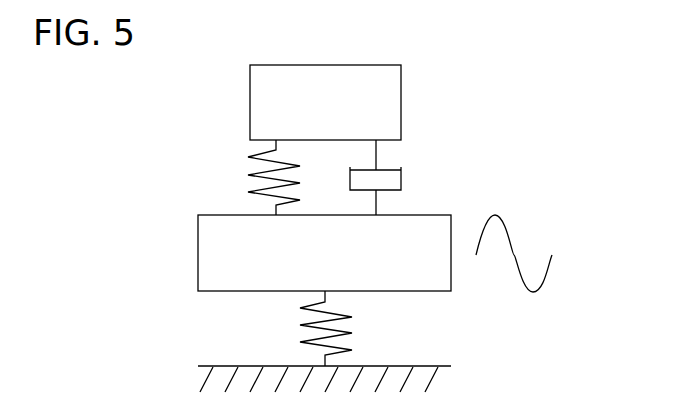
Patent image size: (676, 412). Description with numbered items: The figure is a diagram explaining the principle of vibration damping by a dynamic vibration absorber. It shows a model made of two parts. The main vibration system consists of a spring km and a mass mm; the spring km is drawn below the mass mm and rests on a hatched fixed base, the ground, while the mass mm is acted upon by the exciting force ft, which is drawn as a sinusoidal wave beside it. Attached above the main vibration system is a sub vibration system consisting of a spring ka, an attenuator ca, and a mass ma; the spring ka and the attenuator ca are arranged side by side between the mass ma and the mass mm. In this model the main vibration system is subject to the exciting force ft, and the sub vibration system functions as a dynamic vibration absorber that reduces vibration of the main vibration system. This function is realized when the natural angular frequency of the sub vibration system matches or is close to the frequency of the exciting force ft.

The mass ma is at (325, 102).
The spring ka is at (257, 177).
The attenuator ca is at (391, 177).
The mass mm is at (324, 253).
The spring km is at (307, 328).
The fixed base / ground is at (324, 379).
The exciting force ft is at (532, 253).